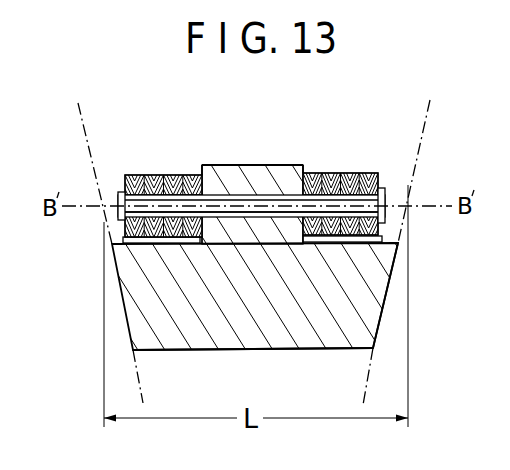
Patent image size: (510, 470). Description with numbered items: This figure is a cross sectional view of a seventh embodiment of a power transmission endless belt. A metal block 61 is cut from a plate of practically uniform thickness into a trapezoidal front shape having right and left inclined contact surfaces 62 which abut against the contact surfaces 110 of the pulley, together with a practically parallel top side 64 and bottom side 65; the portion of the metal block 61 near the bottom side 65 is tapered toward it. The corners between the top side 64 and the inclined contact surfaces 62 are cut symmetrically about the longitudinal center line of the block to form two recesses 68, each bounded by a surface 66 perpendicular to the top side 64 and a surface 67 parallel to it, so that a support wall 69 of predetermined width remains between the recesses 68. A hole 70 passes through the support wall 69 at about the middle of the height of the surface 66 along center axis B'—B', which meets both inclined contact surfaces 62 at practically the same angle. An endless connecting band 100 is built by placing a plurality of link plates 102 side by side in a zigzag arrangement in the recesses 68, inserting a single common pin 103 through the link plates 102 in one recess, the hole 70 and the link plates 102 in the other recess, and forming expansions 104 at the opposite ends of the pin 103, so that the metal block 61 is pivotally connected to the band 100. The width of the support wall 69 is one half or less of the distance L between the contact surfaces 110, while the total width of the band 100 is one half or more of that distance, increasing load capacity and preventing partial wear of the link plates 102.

The metal block 61 is at (388, 320).
The inclined contact surfaces 62 is at (118, 295).
The top side 64 is at (265, 166).
The bottom side 65 is at (300, 349).
The surface 66 is at (208, 230).
The surface 67 is at (113, 247).
The recesses 68 is at (195, 165).
The support wall 69 is at (297, 164).
The hole 70 is at (265, 202).
The endless connecting band 100 is at (118, 183).
The link plates 102 is at (133, 175).
The pin 103 is at (240, 200).
The expansions 104 is at (388, 193).
The contact surfaces of the pulley 110 is at (90, 128).